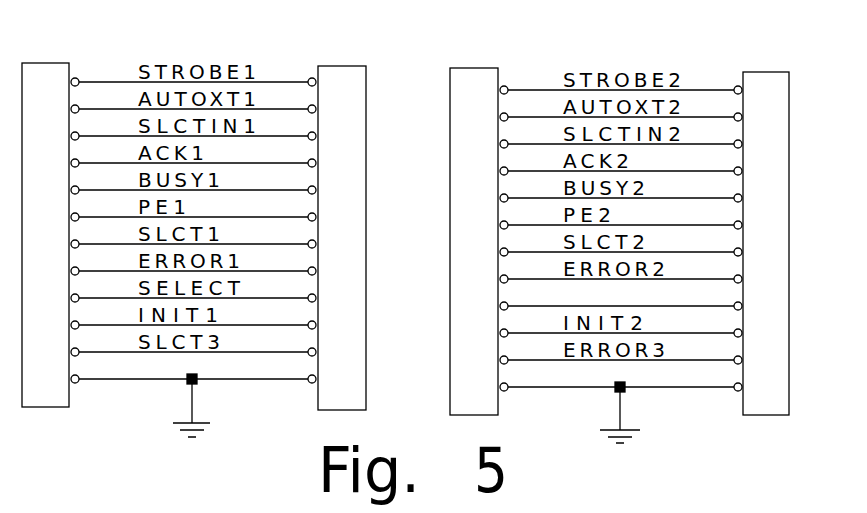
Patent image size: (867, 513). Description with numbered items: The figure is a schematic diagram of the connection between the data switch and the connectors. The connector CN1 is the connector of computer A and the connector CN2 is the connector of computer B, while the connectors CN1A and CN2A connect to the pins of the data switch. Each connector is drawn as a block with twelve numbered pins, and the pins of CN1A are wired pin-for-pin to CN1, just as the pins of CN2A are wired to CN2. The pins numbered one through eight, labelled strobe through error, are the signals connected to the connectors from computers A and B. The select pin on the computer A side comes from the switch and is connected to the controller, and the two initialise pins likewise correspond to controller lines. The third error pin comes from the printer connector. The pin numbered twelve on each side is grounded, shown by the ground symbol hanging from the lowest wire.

The data switch pin connector for computer A CN1A is at (50, 220).
The connector of computer A CN1 is at (337, 222).
The data switch pin connector for computer B CN2A is at (479, 226).
The connector of computer B CN2 is at (762, 226).